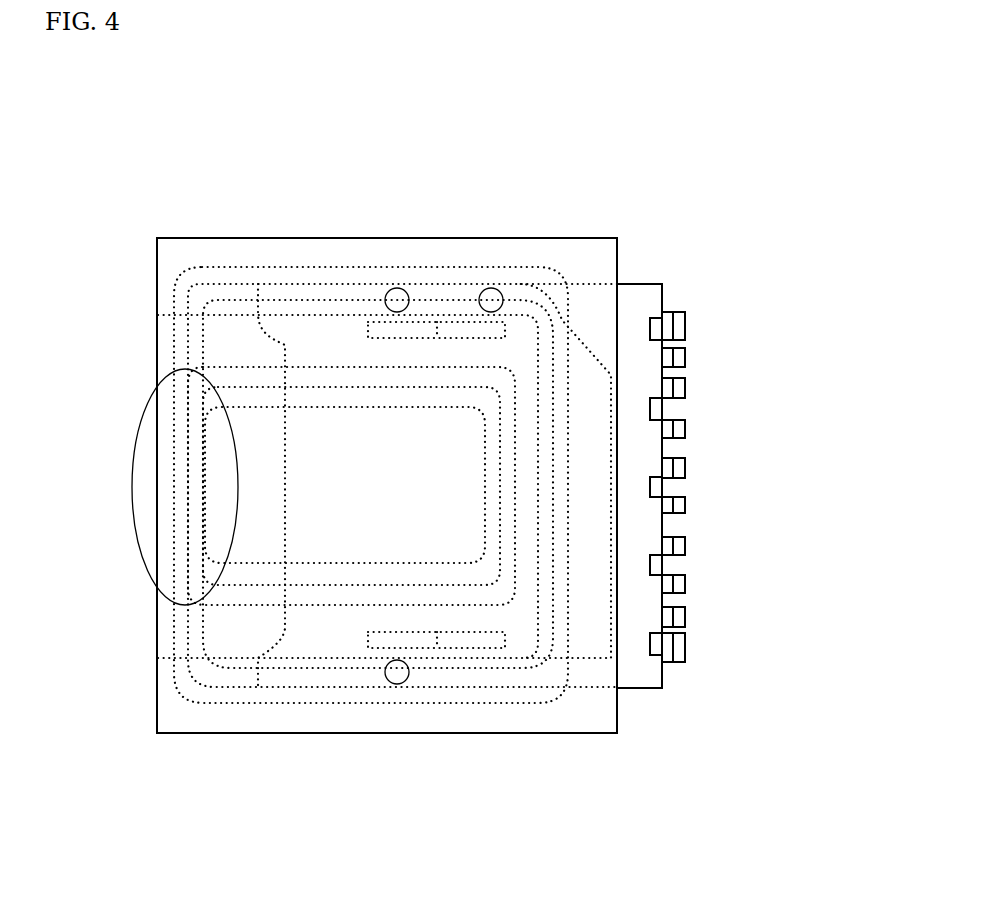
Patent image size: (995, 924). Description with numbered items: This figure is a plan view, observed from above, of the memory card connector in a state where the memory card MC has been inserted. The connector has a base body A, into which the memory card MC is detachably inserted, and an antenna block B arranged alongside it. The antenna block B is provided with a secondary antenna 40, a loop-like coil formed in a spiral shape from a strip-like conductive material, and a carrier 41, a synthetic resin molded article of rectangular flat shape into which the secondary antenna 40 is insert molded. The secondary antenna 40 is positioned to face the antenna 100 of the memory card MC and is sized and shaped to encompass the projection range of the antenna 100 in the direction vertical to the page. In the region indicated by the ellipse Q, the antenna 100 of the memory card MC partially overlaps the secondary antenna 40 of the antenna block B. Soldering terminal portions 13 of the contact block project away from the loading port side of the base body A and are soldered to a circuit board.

The secondary antenna 40 is at (298, 266).
The antenna 100 is at (348, 367).
The antenna block B is at (572, 238).
The base body A is at (642, 276).
The soldering terminal portions 13 is at (688, 329).
The ellipse Q is at (138, 550).
The carrier 41 is at (267, 735).
The memory card MC is at (582, 658).